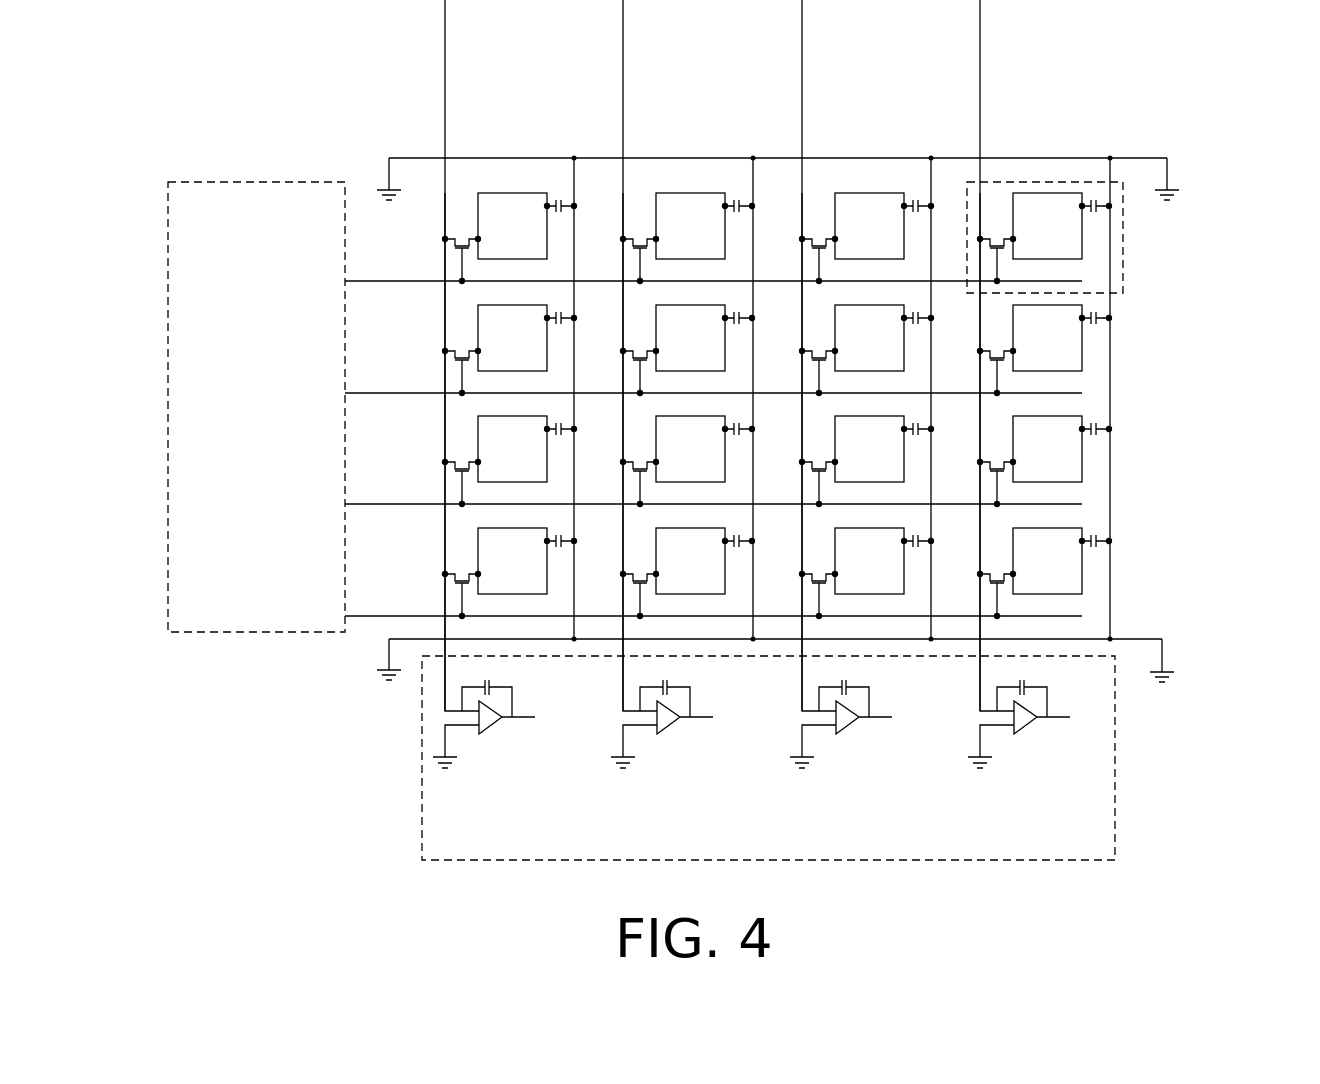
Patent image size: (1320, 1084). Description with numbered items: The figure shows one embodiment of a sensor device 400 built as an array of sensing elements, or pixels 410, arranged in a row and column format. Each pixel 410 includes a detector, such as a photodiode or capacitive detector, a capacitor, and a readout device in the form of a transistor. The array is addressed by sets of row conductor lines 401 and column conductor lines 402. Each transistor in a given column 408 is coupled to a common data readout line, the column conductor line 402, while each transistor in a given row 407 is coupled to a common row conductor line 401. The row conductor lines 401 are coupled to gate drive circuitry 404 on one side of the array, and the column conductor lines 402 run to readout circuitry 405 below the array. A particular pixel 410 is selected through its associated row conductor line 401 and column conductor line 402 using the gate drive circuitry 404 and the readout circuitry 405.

The sensor device 400 is at (448, 98).
The row conductor line 401 is at (357, 614).
The column conductor line 402 is at (802, 677).
The gate drive circuitry 404 is at (256, 407).
The readout circuitry 405 is at (768, 430).
The row 407 is at (1135, 508).
The column 408 is at (927, 142).
The pixel 410 is at (1150, 268).